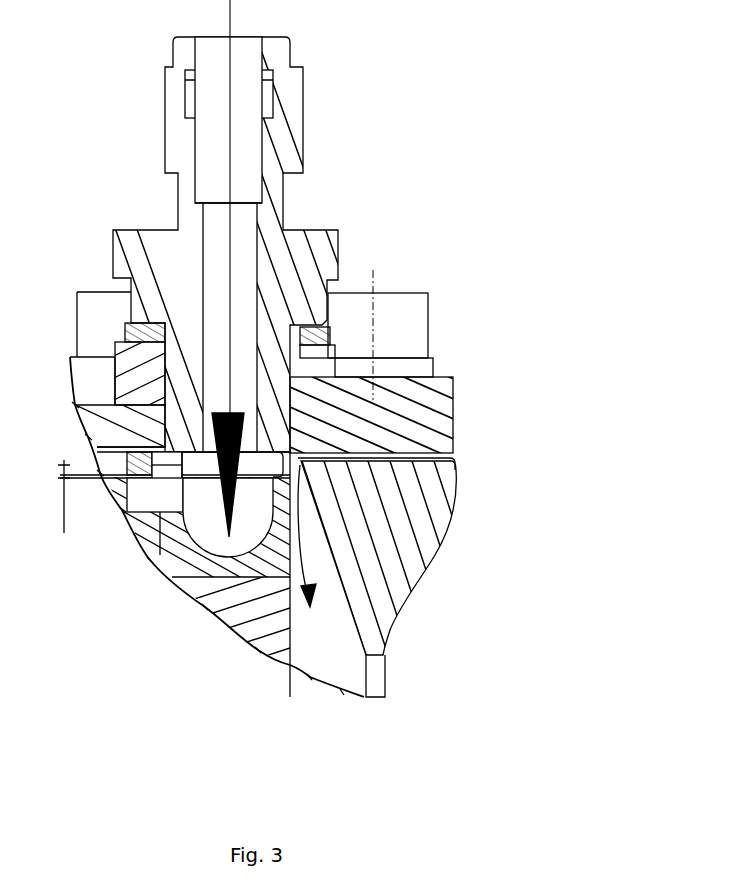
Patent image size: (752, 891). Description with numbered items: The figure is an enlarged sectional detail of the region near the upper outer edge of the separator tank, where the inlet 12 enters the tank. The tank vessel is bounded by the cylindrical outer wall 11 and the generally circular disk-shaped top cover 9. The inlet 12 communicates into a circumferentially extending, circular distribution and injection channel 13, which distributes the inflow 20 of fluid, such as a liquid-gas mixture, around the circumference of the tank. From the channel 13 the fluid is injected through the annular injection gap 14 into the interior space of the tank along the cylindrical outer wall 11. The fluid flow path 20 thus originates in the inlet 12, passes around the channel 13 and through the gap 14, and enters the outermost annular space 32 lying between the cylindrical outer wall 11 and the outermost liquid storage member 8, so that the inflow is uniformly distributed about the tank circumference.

The liquid storage member 8 is at (232, 613).
The top cover 9 is at (453, 403).
The cylindrical outer wall 11 is at (433, 565).
The inlet 12 is at (298, 297).
The distribution and injection channel 13 is at (433, 550).
The annular injection gap 14 is at (247, 538).
The fluid flow path 20 is at (232, 163).
The annular space 32 is at (318, 657).